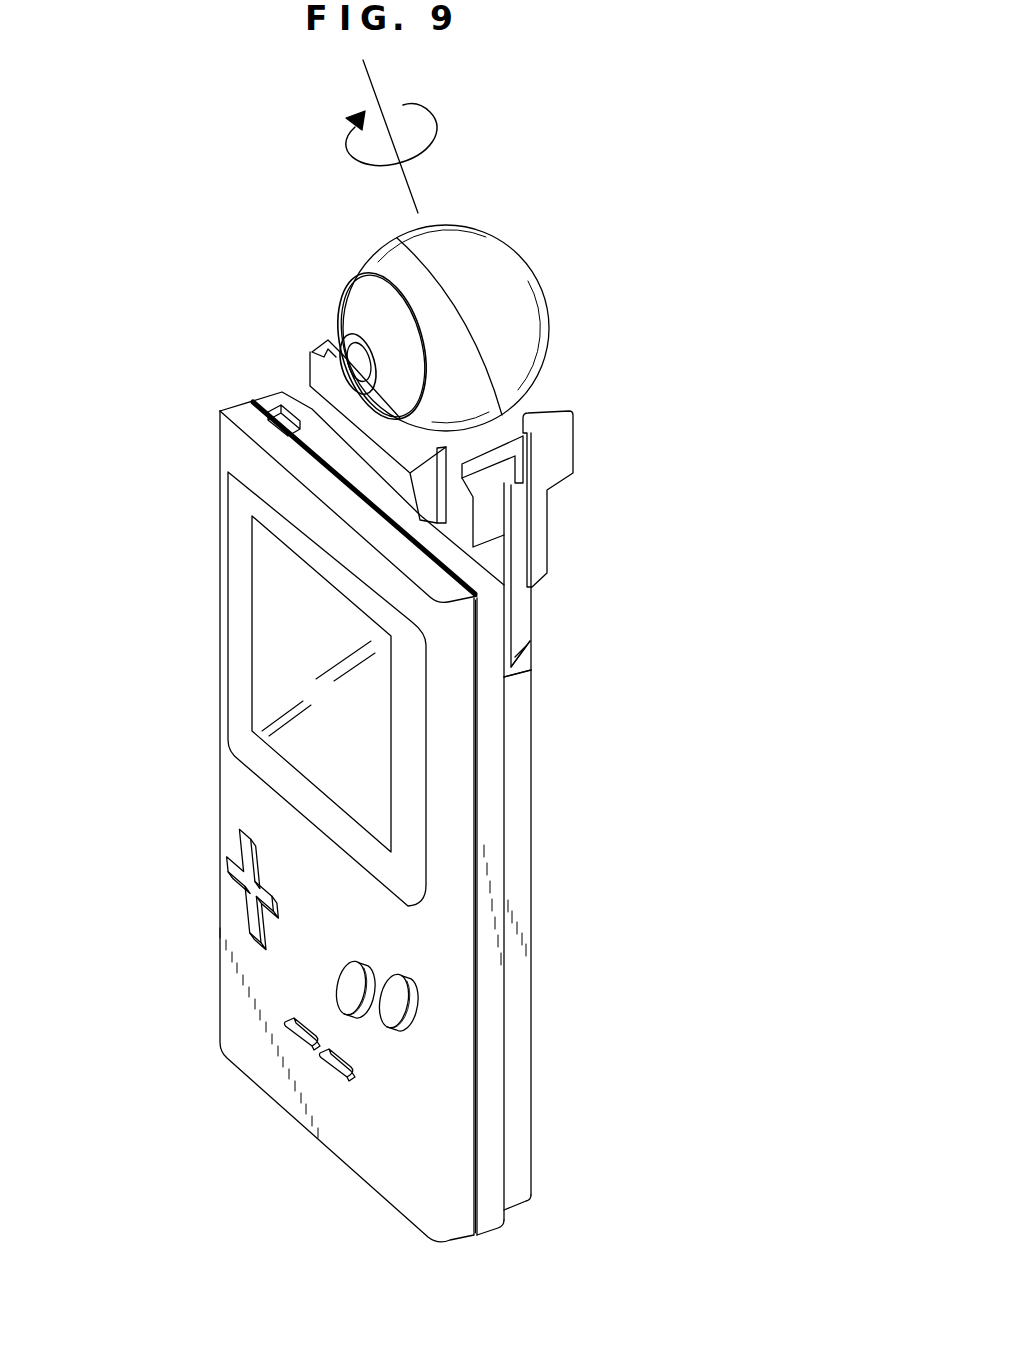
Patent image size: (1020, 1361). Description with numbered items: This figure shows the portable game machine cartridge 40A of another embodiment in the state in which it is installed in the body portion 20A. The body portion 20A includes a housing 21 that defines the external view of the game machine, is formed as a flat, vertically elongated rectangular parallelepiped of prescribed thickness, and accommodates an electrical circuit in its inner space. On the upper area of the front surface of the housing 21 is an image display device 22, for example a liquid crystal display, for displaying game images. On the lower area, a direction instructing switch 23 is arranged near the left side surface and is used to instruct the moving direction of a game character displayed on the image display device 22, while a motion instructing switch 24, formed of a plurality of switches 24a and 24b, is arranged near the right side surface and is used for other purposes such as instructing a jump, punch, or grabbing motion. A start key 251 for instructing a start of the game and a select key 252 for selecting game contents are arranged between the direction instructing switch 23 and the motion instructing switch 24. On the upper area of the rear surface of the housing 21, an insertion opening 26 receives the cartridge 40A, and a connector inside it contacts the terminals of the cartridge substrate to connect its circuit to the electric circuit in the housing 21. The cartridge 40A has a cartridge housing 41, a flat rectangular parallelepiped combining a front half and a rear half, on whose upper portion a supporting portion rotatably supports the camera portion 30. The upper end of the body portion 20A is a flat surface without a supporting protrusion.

The body portion 20A is at (198, 429).
The housing 21 is at (446, 853).
The image display device 22 is at (281, 610).
The direction instructing switch 23 is at (238, 888).
The motion instructing switch 24 is at (760, 985).
The switch 24a is at (370, 975).
The switch 24b is at (396, 1008).
The start key 251 is at (293, 1040).
The select key 252 is at (328, 1073).
The insertion opening 26 is at (518, 662).
The camera portion 30 is at (459, 220).
The portable game machine cartridge 40A is at (603, 182).
The cartridge housing 41 is at (560, 445).